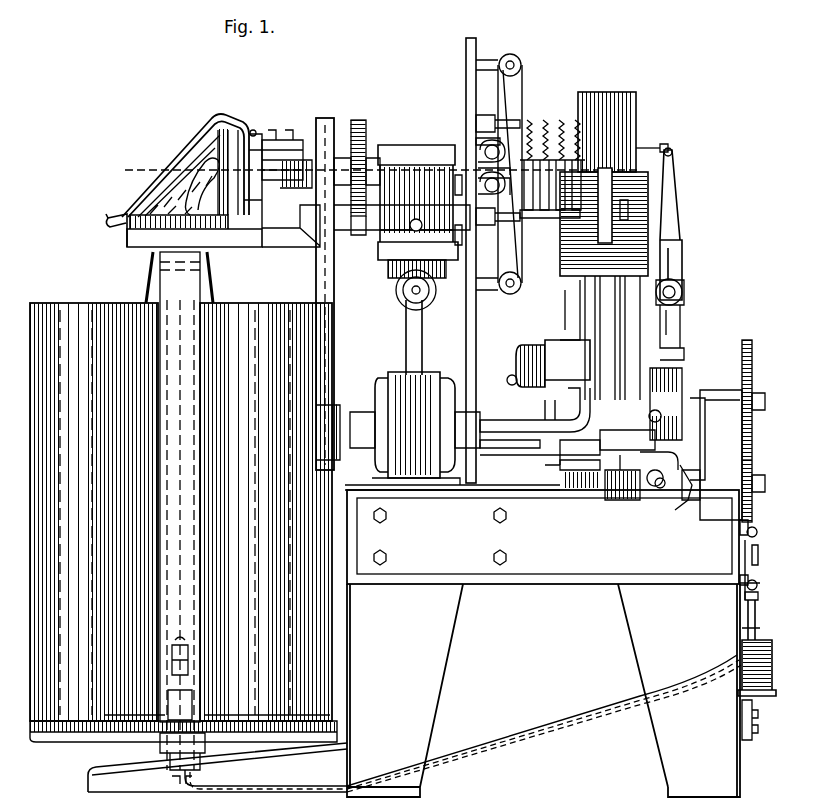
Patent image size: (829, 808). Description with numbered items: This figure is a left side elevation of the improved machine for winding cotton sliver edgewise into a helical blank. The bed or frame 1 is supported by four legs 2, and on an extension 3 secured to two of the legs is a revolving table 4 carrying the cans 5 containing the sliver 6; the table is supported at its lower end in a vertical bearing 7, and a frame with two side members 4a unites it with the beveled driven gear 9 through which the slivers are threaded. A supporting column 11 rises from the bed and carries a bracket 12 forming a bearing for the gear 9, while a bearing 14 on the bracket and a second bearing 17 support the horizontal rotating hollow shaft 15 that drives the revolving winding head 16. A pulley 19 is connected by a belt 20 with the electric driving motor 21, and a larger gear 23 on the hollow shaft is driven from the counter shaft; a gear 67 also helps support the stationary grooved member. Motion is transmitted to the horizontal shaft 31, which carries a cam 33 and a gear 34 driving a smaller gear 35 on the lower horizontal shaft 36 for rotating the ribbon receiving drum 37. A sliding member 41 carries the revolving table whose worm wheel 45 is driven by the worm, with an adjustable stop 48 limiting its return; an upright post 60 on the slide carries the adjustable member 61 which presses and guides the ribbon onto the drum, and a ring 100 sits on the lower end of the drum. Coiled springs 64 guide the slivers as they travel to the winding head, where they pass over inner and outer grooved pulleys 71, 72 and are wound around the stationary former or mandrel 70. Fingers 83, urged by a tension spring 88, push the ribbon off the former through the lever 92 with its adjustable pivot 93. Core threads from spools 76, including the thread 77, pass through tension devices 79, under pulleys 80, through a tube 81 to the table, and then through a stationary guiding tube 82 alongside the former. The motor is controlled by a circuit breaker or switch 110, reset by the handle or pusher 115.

The bed or frame 1 is at (543, 537).
The legs 2 is at (636, 640).
The extension 3 is at (217, 767).
The revolving table 4 is at (102, 730).
The side members 4a is at (195, 352).
The containers or cans 5 is at (181, 512).
The sliver 6 is at (536, 85).
The vertical bearing 7 is at (160, 751).
The beveled driven gear 9 is at (126, 244).
The supporting column 11 is at (390, 337).
The bracket 12 is at (248, 245).
The bearing 14 is at (283, 150).
The horizontal rotating hollow shaft 15 is at (370, 158).
The revolving winding head 16 is at (466, 82).
The second bearing 17 is at (420, 150).
The pulley 19 is at (345, 128).
The belt 20 is at (318, 290).
The electric driving motor 21 is at (386, 378).
The gear 23 is at (358, 228).
The horizontal shaft 31 is at (692, 410).
The cam 33 is at (684, 378).
The gear 34 is at (754, 362).
The gear 35 is at (754, 465).
The lower horizontal shaft 36 is at (700, 480).
The ribbon receiving drum 37 is at (640, 118).
The sliding member 41 is at (640, 500).
The worm wheel 45 is at (585, 492).
The adjustable stop 48 is at (668, 498).
The upright post 60 is at (590, 297).
The adjustable member 61 is at (628, 172).
The coiled springs 64 is at (196, 192).
The gear 67 is at (251, 128).
The stationary former or mandrel 70 is at (505, 180).
The inner grooved pulleys 71 is at (493, 200).
The outer grooved pulleys 72 is at (509, 294).
The spools 76 is at (772, 664).
The thread 77 is at (762, 572).
The tension devices 79 is at (770, 582).
The pulleys 80 is at (760, 558).
The tube 81 is at (583, 727).
The stationary guiding tube 82 is at (188, 220).
The fingers 83 is at (540, 200).
The tension spring 88 is at (560, 122).
The lever 92 is at (682, 200).
The adjustable pivot 93 is at (684, 293).
The ring 100 is at (570, 273).
The circuit breaker or switch 110 is at (545, 348).
The handle or pusher 115 is at (512, 368).